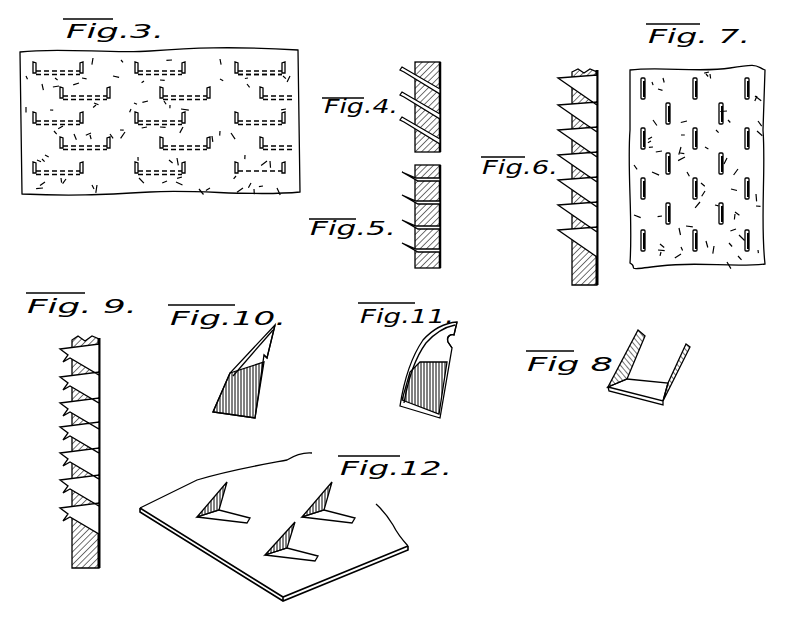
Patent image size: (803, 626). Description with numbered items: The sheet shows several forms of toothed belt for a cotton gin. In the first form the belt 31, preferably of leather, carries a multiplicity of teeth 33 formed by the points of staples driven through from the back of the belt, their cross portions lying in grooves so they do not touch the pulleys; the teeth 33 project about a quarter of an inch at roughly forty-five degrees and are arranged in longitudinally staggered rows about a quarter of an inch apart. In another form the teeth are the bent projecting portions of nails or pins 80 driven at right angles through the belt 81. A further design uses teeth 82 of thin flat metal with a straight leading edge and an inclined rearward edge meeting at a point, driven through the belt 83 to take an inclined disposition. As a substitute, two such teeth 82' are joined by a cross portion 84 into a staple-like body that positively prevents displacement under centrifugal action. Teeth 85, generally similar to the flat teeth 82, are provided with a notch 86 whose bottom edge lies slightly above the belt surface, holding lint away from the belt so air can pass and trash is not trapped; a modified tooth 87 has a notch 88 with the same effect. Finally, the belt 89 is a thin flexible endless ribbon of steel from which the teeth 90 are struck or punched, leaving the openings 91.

In FIG. 3, the belt 31 is at (278, 57).
In FIG. 4, the belt 31 is at (440, 63).
In FIG. 3, the teeth 33 is at (239, 67).
In FIG. 4, the teeth 33 is at (404, 67).
In FIG. 5, the nails or pins 80 is at (440, 227).
In FIG. 5, the belt 81 is at (441, 242).
In FIG. 6, the teeth 82 is at (552, 166).
In FIG. 7, the teeth 82 is at (695, 147).
In FIG. 6, the belt 83 is at (595, 62).
In FIG. 7, the belt 83 is at (723, 75).
In FIG. 8, the teeth 82' is at (677, 354).
In FIG. 8, the cross portion 84 is at (635, 387).
In FIG. 9, the teeth 85 is at (85, 421).
In FIG. 10, the teeth 85 is at (230, 392).
In FIG. 9, the notch 86 is at (68, 398).
In FIG. 10, the notch 86 is at (270, 354).
In FIG. 11, the tooth 87 is at (440, 367).
In FIG. 11, the notch 88 is at (455, 336).
In FIG. 12, the belt 89 is at (307, 492).
In FIG. 12, the teeth 90 is at (212, 509).
In FIG. 12, the openings 91 is at (238, 513).